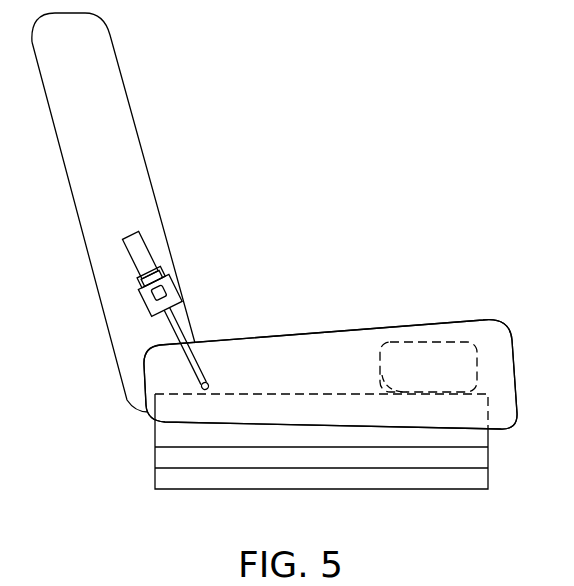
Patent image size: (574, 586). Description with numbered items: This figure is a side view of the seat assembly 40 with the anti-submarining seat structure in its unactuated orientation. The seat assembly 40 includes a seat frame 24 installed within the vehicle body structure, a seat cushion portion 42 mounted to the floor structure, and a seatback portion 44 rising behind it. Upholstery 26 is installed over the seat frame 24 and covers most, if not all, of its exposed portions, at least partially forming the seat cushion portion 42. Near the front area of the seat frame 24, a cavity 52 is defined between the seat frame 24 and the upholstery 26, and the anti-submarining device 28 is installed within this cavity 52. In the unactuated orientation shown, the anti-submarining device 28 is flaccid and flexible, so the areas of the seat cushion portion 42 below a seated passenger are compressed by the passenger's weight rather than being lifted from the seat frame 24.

The seat frame 24 is at (275, 408).
The upholstery 26 is at (408, 325).
The anti-submarining device 28 is at (453, 372).
The seat assembly 40 is at (408, 150).
The seat cushion portion 42 is at (347, 365).
The seatback portion 44 is at (97, 152).
The cavity 52 is at (408, 393).